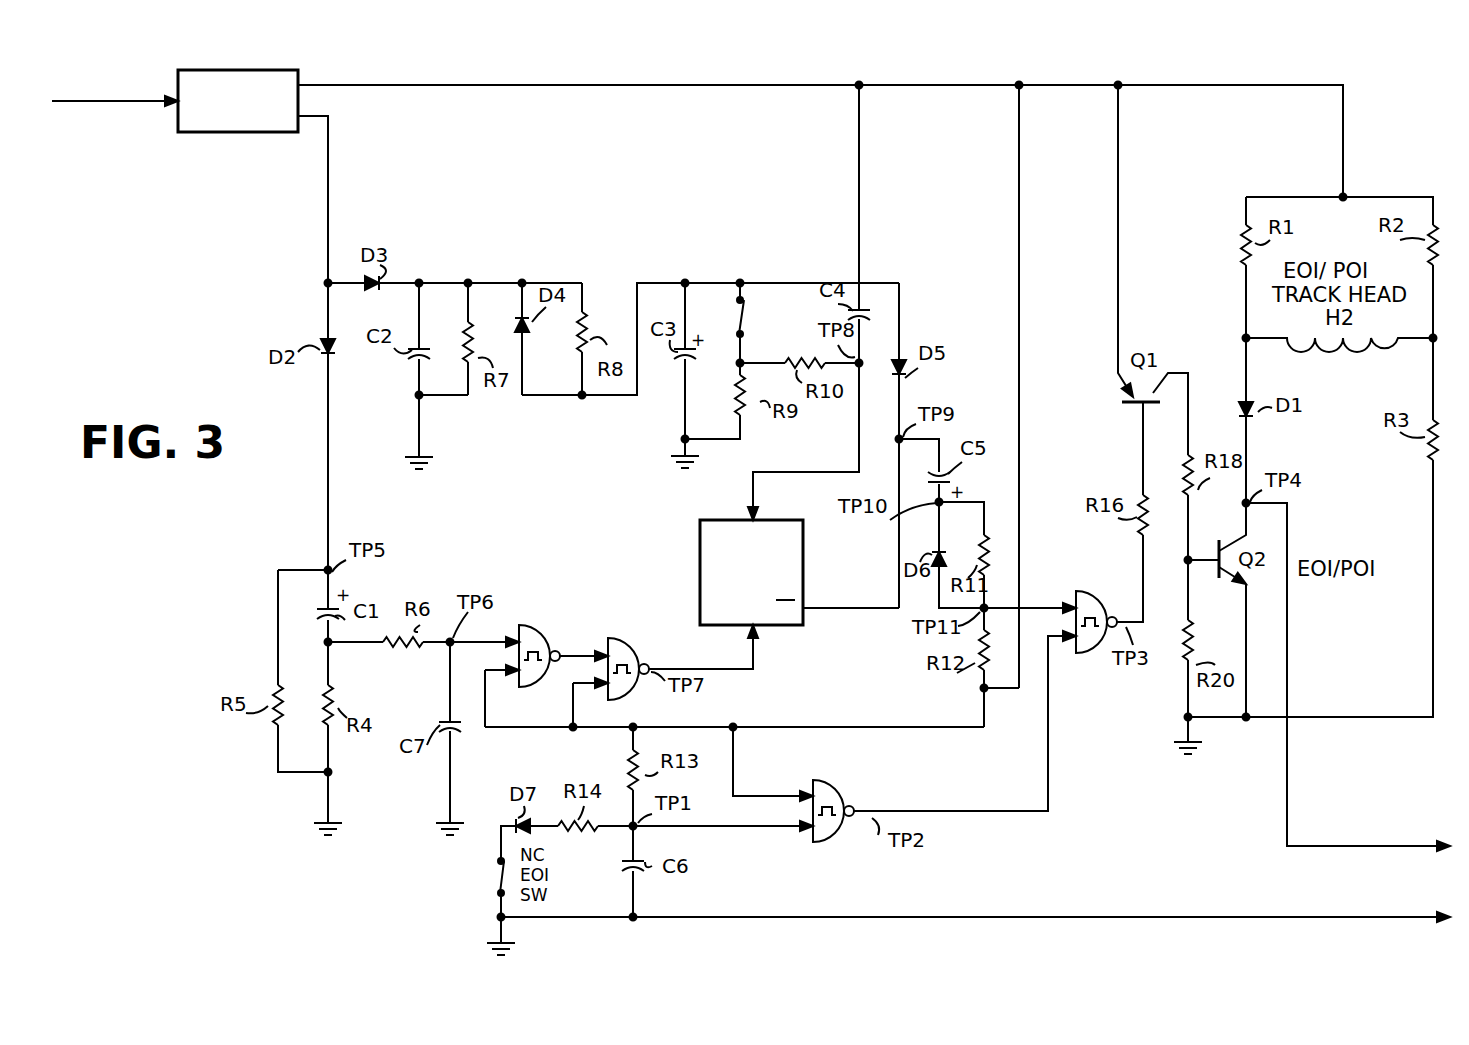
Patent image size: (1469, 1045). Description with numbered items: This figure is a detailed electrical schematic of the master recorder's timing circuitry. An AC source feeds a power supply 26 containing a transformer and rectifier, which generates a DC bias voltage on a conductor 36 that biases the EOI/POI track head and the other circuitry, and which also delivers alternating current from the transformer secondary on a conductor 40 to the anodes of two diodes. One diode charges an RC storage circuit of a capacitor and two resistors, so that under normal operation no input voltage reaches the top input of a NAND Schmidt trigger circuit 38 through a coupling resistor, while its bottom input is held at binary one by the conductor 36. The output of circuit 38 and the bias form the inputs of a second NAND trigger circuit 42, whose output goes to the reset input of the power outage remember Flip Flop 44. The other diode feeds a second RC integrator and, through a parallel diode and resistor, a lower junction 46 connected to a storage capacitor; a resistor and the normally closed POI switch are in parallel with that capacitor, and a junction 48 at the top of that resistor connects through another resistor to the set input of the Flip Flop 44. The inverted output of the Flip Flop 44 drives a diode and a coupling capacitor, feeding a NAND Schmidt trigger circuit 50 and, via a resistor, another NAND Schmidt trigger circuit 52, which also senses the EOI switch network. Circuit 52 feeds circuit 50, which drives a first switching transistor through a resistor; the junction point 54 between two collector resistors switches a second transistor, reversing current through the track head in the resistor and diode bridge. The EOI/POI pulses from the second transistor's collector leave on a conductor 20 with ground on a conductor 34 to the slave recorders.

The conductor 20 is at (1395, 845).
The power supply 26 is at (262, 71).
The conductor 34 is at (1377, 920).
The conductor 36 is at (445, 82).
The NAND Schmidt trigger circuit 38 is at (540, 622).
The conductor 40 is at (330, 190).
The second NAND trigger circuit 42 is at (630, 637).
The power outage remember Flip Flop 44 is at (700, 522).
The lower junction 46 is at (585, 398).
The junction 48 is at (736, 366).
The NAND Schmidt trigger circuit 50 is at (1085, 598).
The NAND Schmidt trigger circuit 52 is at (845, 790).
The junction point 54 is at (1185, 558).